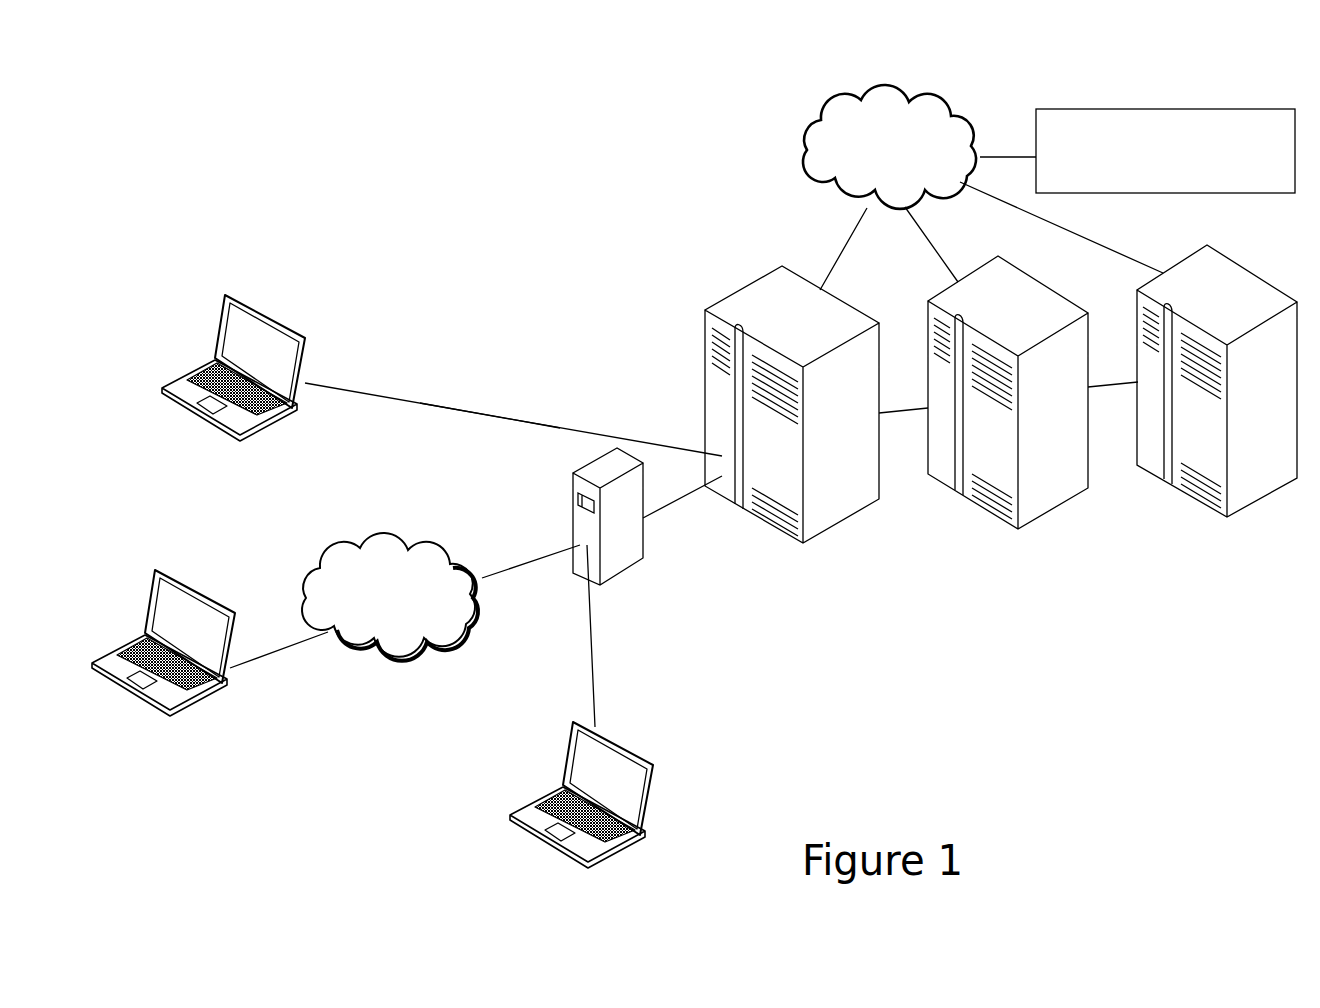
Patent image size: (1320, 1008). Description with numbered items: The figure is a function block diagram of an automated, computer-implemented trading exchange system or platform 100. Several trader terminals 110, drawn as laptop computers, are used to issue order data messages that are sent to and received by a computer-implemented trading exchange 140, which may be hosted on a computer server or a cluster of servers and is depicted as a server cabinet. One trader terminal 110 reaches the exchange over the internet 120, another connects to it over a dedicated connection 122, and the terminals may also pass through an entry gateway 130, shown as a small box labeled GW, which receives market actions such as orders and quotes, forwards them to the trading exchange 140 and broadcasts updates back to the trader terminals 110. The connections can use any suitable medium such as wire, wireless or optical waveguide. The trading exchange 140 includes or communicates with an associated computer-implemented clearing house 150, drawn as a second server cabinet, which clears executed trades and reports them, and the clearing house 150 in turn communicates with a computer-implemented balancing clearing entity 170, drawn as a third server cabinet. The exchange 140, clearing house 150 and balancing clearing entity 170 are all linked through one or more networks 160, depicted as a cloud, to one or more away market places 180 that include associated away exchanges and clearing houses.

The trading exchange system 100 is at (477, 261).
The trader terminal 110 is at (177, 378).
The internet 120 is at (370, 548).
The dedicated connection 122 is at (507, 415).
The entry gateway 130 is at (576, 526).
The computer-implemented trading exchange 140 is at (707, 353).
The computer-implemented clearing house 150 is at (1055, 483).
The network 160 is at (947, 102).
The computer-implemented balancing clearing entity 170 is at (1250, 470).
The away market place 180 is at (1205, 193).